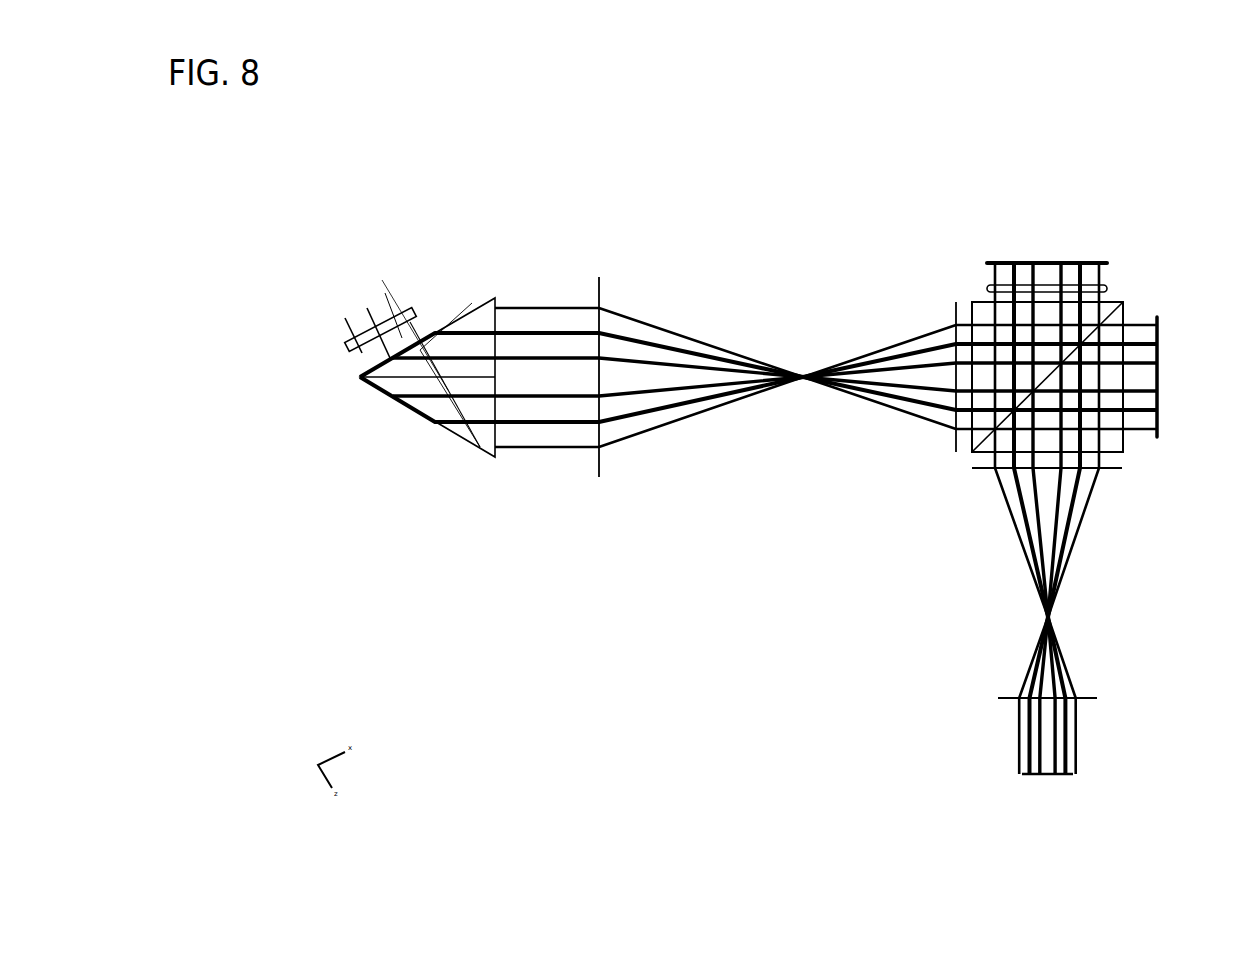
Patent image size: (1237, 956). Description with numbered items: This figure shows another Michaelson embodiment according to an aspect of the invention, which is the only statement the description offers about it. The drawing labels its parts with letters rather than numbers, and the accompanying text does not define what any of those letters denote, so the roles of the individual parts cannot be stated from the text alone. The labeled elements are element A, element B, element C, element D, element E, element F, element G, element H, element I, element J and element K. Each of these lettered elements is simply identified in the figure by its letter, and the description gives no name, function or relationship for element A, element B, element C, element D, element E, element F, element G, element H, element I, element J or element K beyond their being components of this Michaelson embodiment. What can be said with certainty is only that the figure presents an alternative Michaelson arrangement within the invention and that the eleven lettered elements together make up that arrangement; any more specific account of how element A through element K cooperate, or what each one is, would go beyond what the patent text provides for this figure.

The light source / grating A is at (391, 309).
The prism B is at (427, 378).
The lens C is at (598, 358).
The lens D is at (936, 368).
The lens E is at (1110, 282).
The lens F is at (1055, 490).
The lens G is at (1066, 682).
The detector H is at (1065, 776).
The mirror I is at (1042, 243).
The mirror J is at (1171, 392).
The beam splitter cube K is at (970, 454).